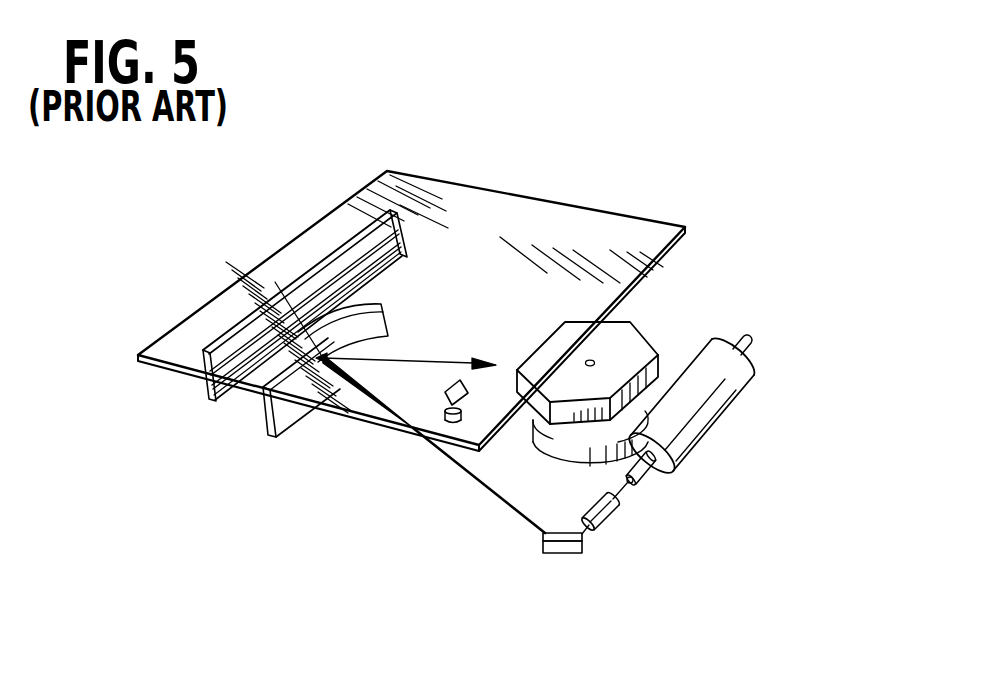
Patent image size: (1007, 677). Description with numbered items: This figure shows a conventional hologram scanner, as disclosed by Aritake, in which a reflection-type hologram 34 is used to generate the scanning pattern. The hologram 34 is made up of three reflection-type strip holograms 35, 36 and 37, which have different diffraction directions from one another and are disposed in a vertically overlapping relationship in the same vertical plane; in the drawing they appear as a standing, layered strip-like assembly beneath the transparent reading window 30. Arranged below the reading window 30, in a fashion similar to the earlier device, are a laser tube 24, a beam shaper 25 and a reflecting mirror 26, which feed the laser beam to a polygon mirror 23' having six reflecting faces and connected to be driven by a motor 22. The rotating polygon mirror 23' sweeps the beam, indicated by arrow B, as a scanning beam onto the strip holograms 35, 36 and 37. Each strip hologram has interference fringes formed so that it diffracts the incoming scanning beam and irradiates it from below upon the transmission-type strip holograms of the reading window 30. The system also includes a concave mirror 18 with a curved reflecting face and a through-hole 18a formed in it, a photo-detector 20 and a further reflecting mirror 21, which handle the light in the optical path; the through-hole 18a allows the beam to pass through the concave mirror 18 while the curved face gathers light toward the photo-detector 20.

The reading window 30 is at (557, 210).
The strip hologram 35 is at (258, 322).
The strip hologram 36 is at (305, 307).
The strip hologram 37 is at (347, 293).
The hologram 34 is at (210, 404).
The concave mirror 18 is at (288, 424).
The through-hole 18a is at (323, 362).
The beam direction B is at (428, 351).
The photo-detector 20 is at (452, 424).
The reflecting mirror 21 is at (468, 404).
The polygon mirror 23' is at (619, 375).
The laser tube 24 is at (722, 392).
The motor 22 is at (617, 484).
The beam shaper 25 is at (603, 520).
The reflecting mirror 26 is at (558, 553).